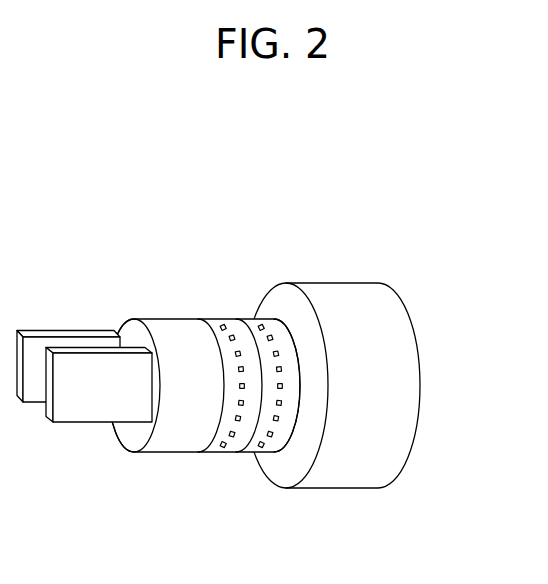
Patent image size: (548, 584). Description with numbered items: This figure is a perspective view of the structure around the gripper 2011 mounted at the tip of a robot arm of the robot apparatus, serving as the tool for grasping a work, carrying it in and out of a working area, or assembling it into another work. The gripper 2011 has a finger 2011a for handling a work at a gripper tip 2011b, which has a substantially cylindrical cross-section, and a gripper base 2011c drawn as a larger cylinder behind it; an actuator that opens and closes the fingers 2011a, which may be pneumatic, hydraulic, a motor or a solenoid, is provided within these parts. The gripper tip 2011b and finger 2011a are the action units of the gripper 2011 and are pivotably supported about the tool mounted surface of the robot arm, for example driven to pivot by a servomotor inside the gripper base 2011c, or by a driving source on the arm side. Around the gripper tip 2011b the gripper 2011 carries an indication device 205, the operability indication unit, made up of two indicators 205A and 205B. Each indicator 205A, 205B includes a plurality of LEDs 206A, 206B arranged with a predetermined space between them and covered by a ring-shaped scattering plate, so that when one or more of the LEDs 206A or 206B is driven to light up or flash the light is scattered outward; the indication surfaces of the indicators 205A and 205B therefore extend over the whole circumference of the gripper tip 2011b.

The gripper 2011 is at (264, 359).
The finger 2011a is at (68, 408).
The gripper tip 2011b is at (117, 455).
The gripper base 2011c is at (405, 394).
The indication device 205 is at (247, 359).
The indicator 205A is at (262, 396).
The indicator 205B is at (217, 362).
The LEDs 206A is at (260, 443).
The LEDs 206B is at (222, 443).